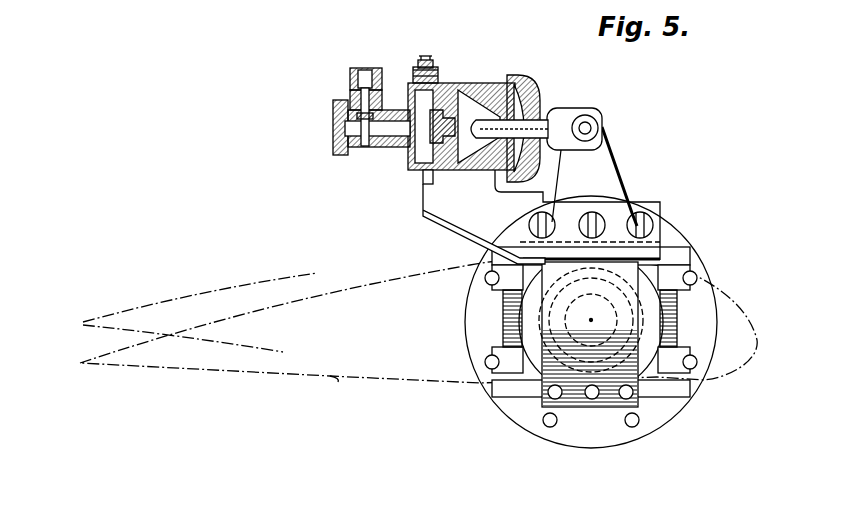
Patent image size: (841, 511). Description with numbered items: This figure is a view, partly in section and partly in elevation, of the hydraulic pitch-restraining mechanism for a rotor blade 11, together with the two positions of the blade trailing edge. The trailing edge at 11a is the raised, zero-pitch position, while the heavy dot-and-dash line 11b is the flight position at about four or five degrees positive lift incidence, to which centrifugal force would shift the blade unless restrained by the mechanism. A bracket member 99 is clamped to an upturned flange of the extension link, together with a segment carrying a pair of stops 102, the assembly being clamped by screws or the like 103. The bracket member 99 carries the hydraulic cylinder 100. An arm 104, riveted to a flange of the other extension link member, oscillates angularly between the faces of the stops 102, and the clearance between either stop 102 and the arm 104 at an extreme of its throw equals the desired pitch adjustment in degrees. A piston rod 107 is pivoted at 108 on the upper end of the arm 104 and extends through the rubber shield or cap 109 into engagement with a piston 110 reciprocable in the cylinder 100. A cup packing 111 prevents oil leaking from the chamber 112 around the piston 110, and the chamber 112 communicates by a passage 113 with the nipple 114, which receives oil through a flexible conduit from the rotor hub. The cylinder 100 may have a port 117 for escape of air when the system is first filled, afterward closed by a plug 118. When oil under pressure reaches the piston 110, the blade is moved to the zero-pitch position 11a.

The blade 11 is at (340, 378).
The trailing edge raised position 11a is at (179, 312).
The trailing edge flight position 11b is at (400, 321).
The bracket member 99 is at (470, 219).
The hydraulic cylinder 100 is at (478, 83).
The stops 102 is at (549, 215).
The screws 103 is at (527, 227).
The arm 104 is at (618, 150).
The piston rod 107 is at (534, 127).
The pivot 108 is at (588, 128).
The rubber shield or cap 109 is at (525, 75).
The piston 110 is at (430, 205).
The cup packing 111 is at (424, 180).
The chamber 112 is at (430, 150).
The passage 113 is at (378, 128).
The nipple 114 is at (350, 78).
The port 117 is at (437, 80).
The plug 118 is at (428, 62).